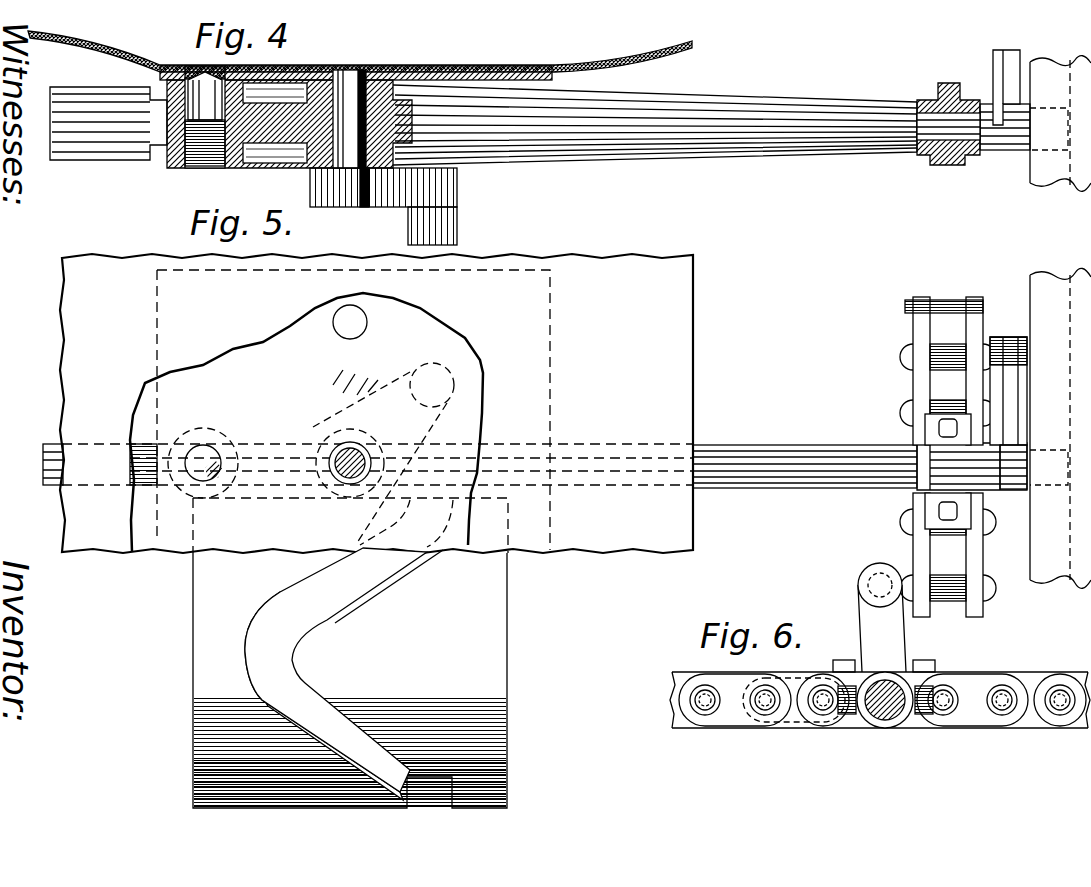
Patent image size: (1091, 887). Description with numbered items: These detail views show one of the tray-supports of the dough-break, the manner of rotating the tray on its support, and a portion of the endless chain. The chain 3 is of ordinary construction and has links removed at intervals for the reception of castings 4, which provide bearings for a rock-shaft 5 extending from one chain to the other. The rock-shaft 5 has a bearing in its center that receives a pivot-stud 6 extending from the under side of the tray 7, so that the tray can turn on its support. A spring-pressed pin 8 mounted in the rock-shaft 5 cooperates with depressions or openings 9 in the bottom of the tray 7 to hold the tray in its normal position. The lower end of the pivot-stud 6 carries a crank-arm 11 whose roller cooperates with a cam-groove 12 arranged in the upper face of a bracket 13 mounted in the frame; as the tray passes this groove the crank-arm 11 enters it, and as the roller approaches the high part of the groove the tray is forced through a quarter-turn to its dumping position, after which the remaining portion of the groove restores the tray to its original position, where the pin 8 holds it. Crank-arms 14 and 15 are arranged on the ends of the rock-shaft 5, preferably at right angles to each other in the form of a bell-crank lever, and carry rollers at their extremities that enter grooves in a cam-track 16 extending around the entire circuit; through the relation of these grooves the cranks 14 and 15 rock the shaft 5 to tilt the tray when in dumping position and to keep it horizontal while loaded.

In FIG. 5, the chain 3 is at (918, 328).
In FIG. 6, the chain 3 is at (970, 682).
In FIG. 4, the casting 4 is at (952, 158).
In FIG. 6, the casting 4 is at (925, 737).
In FIG. 4, the rock-shaft 5 is at (737, 125).
In FIG. 5, the rock-shaft 5 is at (882, 480).
In FIG. 6, the rock-shaft 5 is at (876, 717).
In FIG. 4, the pivot-stud 6 is at (349, 119).
In FIG. 5, the pivot-stud 6 is at (342, 458).
In FIG. 4, the tray 7 is at (506, 66).
In FIG. 5, the tray 7 is at (376, 403).
In FIG. 4, the spring-pressed pin 8 is at (205, 119).
In FIG. 5, the spring-pressed pin 8 is at (213, 472).
In FIG. 4, the depressions or openings 9 is at (215, 68).
In FIG. 5, the depressions or openings 9 is at (358, 326).
In FIG. 4, the crank-arm 11 is at (420, 190).
In FIG. 5, the crank-arm 11 is at (393, 385).
In FIG. 5, the cam-groove 12 is at (349, 586).
In FIG. 5, the bracket 13 is at (350, 653).
In FIG. 5, the crank-arm 14 is at (1003, 347).
In FIG. 6, the crank-arm 14 is at (846, 722).
In FIG. 4, the crank-arm 15 is at (1006, 72).
In FIG. 5, the crank-arm 15 is at (1007, 463).
In FIG. 6, the crank-arm 15 is at (882, 617).
In FIG. 4, the cam-track 16 is at (1060, 124).
In FIG. 5, the cam-track 16 is at (1060, 428).